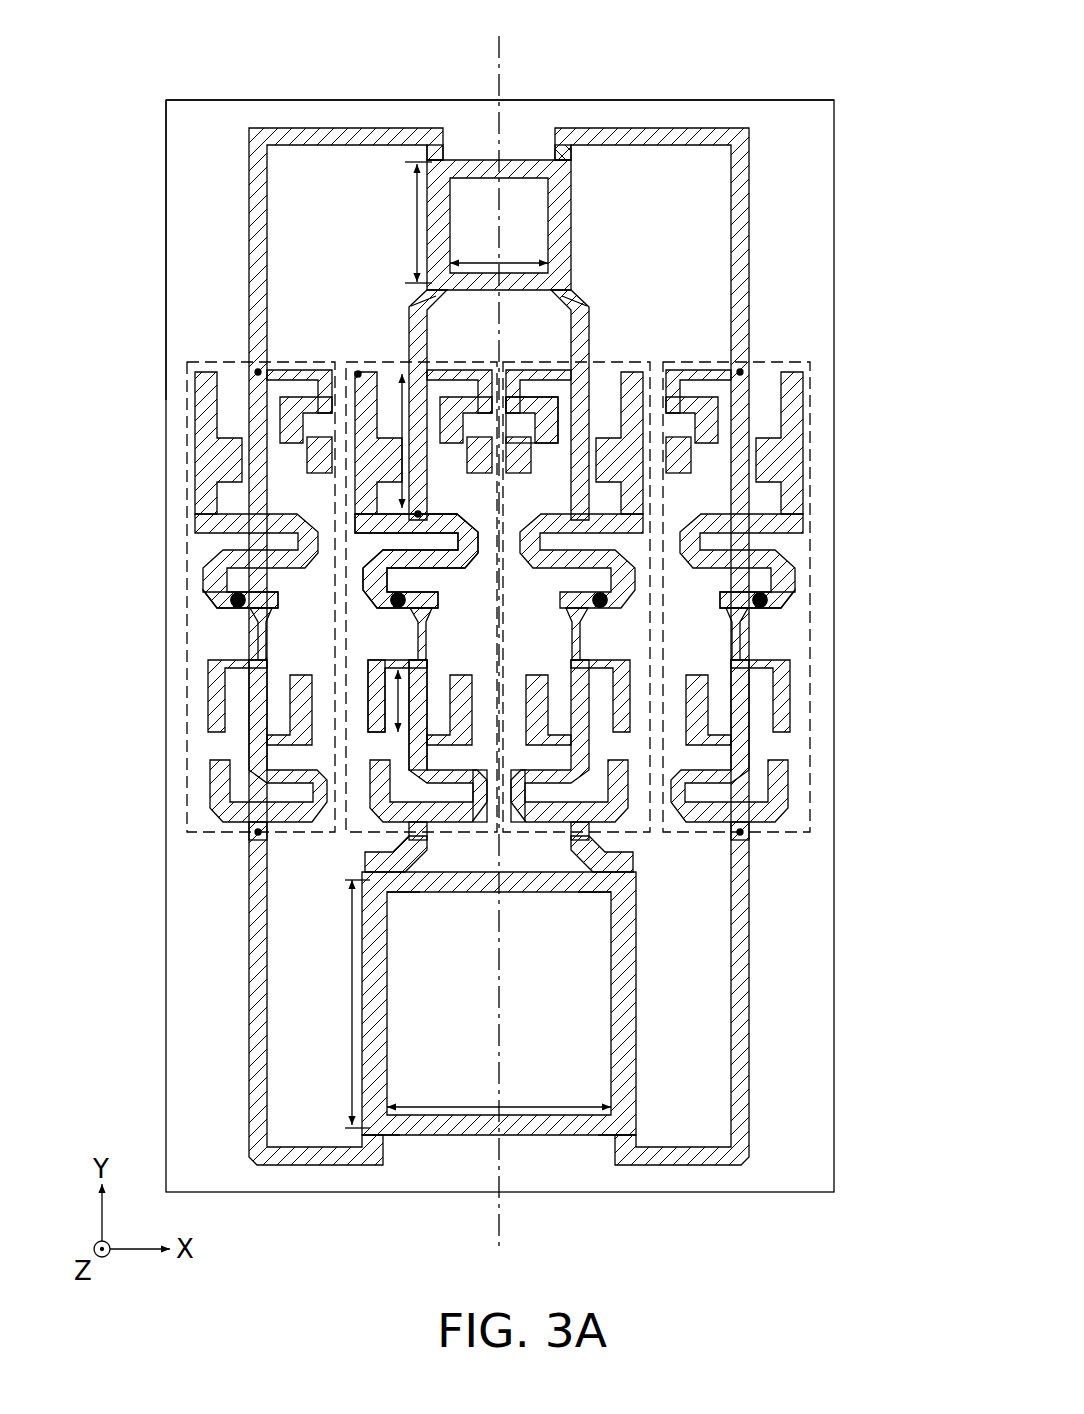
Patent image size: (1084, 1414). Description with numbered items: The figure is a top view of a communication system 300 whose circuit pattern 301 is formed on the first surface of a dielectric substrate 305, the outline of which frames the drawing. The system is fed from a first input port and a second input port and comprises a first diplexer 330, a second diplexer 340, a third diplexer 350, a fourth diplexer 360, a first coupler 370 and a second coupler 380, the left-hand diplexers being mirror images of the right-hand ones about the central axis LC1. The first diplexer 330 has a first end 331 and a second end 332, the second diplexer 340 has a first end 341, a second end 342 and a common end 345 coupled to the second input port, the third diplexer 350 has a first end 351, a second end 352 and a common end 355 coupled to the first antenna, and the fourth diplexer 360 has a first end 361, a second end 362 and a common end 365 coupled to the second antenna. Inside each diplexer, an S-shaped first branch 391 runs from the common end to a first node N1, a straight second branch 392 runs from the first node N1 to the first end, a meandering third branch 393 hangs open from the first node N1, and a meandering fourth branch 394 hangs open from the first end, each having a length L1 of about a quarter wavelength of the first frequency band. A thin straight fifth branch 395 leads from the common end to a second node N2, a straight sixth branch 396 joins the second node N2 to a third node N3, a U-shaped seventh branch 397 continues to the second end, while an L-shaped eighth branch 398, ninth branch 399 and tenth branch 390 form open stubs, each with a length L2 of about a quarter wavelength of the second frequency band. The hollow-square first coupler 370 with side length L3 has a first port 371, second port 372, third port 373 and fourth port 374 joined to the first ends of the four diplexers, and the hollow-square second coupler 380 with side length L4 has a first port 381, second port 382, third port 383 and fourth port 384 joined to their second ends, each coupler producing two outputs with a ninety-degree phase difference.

The communication system 300 is at (122, 24).
The circuit pattern 301 is at (202, 90).
The dielectric substrate 305 is at (800, 100).
The first diplexer 330 is at (358, 365).
The first end of the first diplexer 331 is at (432, 372).
The second end of the first diplexer 332 is at (372, 856).
The second diplexer 340 is at (637, 358).
The first end of the second diplexer 341 is at (566, 372).
The second end of the second diplexer 342 is at (626, 856).
The common end of the second diplexer 345 is at (613, 600).
The third diplexer 350 is at (185, 530).
The first end of the third diplexer 351 is at (256, 371).
The second end of the third diplexer 352 is at (250, 845).
The common end of the third diplexer 355 is at (232, 605).
The fourth diplexer 360 is at (813, 530).
The first end of the fourth diplexer 361 is at (742, 371).
The second end of the fourth diplexer 362 is at (748, 845).
The common end of the fourth diplexer 365 is at (766, 605).
The first coupler 370 is at (586, 214).
The first port of the first coupler 371 is at (440, 302).
The second port of the first coupler 372 is at (575, 302).
The third port of the first coupler 373 is at (435, 127).
The fourth port of the first coupler 374 is at (562, 127).
The second coupler 380 is at (652, 995).
The first port of the second coupler 381 is at (388, 893).
The second port of the second coupler 382 is at (610, 893).
The third port of the second coupler 383 is at (382, 1137).
The fourth port of the second coupler 384 is at (616, 1137).
The tenth branch 390 is at (380, 793).
The first branch 391 is at (425, 570).
The second branch 392 is at (420, 512).
The third branch 393 is at (358, 376).
The fourth branch 394 is at (488, 420).
The fifth branch 395 is at (418, 608).
The sixth branch 396 is at (517, 812).
The seventh branch 397 is at (481, 812).
The eighth branch 398 is at (423, 700).
The ninth branch 399 is at (380, 690).
The central axis LC1 is at (500, 625).
The length of the first to fourth branches L1 is at (401, 370).
The length of the fifth to tenth branches L2 is at (396, 720).
The side length of the first hollow square shape L3 is at (461, 222).
The side length of the second hollow square shape L4 is at (463, 1004).
The first node N1 is at (430, 523).
The second node N2 is at (424, 661).
The third node N3 is at (420, 745).